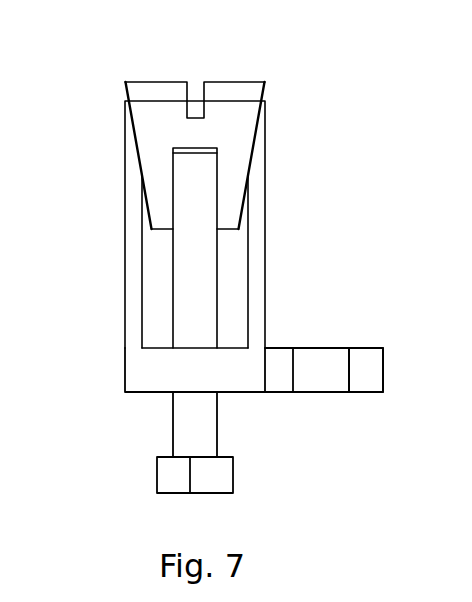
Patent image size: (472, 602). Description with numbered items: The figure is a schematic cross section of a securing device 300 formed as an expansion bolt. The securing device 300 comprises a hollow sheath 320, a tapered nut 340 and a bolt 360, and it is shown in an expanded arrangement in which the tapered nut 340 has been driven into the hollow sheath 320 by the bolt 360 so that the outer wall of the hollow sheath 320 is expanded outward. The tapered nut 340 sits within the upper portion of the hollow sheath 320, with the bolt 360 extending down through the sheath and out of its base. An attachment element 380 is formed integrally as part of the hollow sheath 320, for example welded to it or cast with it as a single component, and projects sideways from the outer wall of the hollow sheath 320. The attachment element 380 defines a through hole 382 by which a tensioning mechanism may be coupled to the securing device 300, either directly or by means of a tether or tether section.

The securing device 300 is at (63, 480).
The hollow sheath 320 is at (125, 360).
The tapered nut 340 is at (125, 82).
The bolt 360 is at (173, 425).
The attachment element 380 is at (383, 392).
The through hole 382 is at (322, 368).